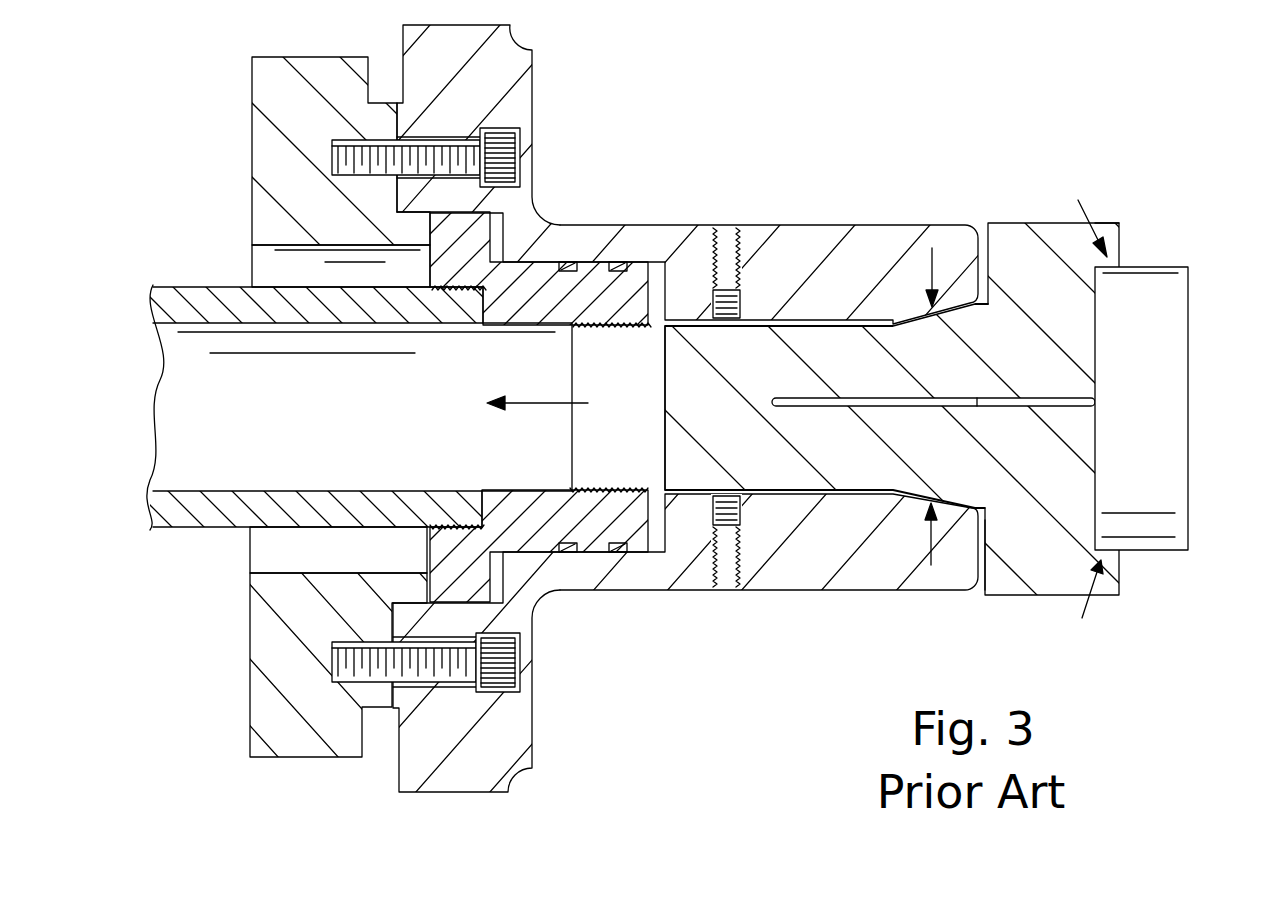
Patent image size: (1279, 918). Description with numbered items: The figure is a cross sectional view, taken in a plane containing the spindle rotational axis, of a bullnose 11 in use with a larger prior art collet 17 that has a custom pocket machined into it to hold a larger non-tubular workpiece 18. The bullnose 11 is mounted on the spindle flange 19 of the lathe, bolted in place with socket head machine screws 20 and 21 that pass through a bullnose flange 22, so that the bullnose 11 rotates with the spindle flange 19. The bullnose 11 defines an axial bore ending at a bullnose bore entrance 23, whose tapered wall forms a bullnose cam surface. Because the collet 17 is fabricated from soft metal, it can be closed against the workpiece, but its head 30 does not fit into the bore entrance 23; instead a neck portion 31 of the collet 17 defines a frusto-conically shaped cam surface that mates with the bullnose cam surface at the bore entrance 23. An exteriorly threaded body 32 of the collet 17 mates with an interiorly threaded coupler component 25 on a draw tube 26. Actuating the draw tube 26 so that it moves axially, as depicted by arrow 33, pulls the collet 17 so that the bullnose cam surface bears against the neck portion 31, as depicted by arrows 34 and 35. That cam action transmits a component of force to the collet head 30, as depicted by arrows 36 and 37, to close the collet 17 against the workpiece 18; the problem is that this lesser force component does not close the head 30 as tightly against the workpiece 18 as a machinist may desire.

The bullnose 11 is at (975, 225).
The larger prior art collet 17 is at (1120, 218).
The larger workpiece 18 is at (1178, 300).
The spindle flange 19 is at (263, 80).
The socket head machine screw 20 is at (520, 150).
The socket head machine screw 21 is at (514, 655).
The bullnose flange 22 is at (525, 62).
The bullnose bore entrance 23 is at (988, 520).
The coupler component 25 is at (588, 270).
The draw tube 26 is at (193, 293).
The collet head 30 is at (1033, 230).
The neck portion 31 is at (918, 490).
The exteriorly threaded body 32 is at (604, 470).
The arrow 33 is at (546, 410).
The arrow 34 is at (932, 268).
The arrow 35 is at (934, 562).
The arrow 36 is at (1078, 200).
The arrow 37 is at (1086, 608).